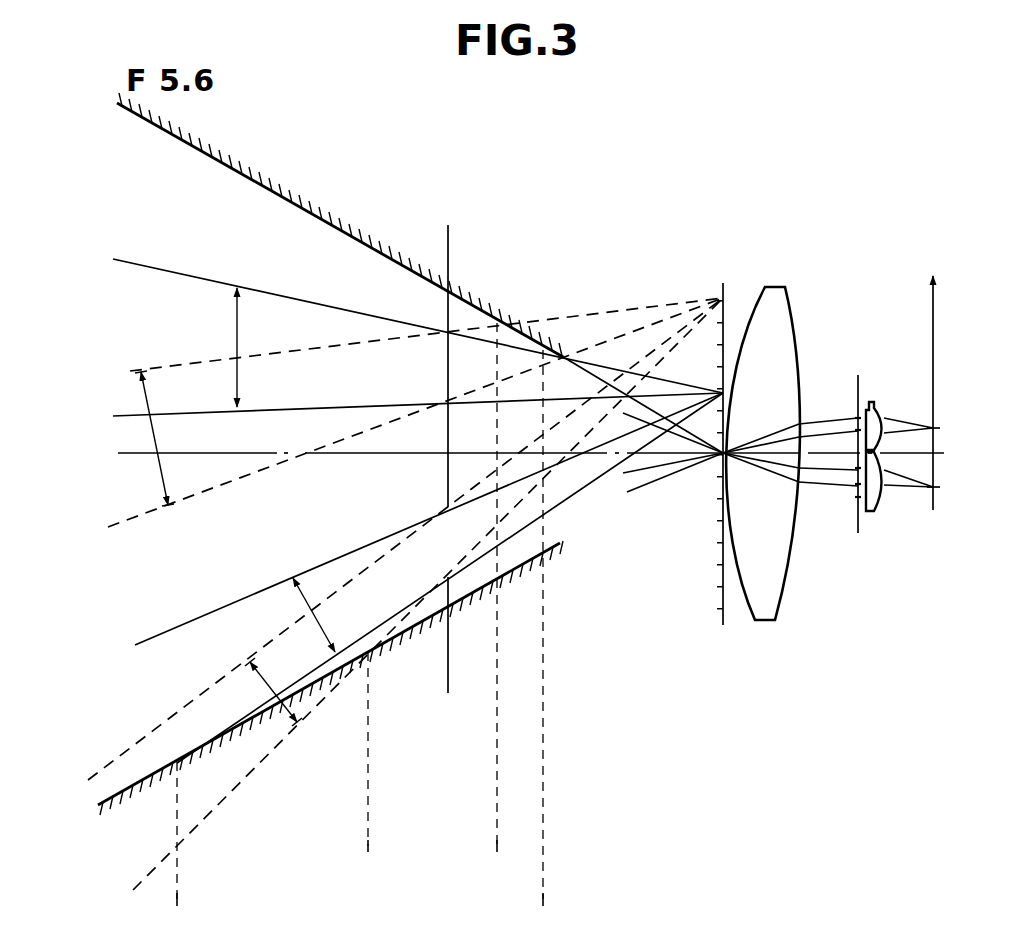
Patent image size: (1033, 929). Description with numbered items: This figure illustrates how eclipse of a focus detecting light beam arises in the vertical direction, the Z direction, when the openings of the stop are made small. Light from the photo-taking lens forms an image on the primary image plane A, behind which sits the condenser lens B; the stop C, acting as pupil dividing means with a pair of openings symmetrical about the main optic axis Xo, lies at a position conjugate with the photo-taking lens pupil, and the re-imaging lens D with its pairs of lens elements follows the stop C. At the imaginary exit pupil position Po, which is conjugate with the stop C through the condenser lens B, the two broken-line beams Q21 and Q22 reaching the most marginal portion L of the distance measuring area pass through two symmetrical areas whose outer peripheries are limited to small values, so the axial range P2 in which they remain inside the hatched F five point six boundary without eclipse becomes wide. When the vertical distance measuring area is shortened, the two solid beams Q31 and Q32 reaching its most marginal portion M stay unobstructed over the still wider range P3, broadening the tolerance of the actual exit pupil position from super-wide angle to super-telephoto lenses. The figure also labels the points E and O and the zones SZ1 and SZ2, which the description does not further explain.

The primary image plane A is at (722, 469).
The condenser lens B is at (763, 471).
The stop C is at (858, 471).
The re-imaging lens D is at (879, 471).
The image sensor plane E is at (931, 487).
The most marginal portion of the distance measuring area L is at (419, 582).
The most marginal portion of the short distance measuring area M is at (440, 511).
The axial pupil point (optical axis) O is at (682, 430).
The Z direction Z is at (932, 377).
The first sensor zone SZ1 is at (858, 420).
The second sensor zone SZ2 is at (857, 487).
The light beam for focus detection Q31 is at (204, 347).
The light beam for focus detection Q21 is at (139, 438).
The light beam for focus detection Q32 is at (295, 615).
The light beam for focus detection Q22 is at (260, 692).
The main optic axis Xo is at (358, 461).
The imaginary exit pupil position Po is at (447, 479).
The range in the direction of the optic axis P2 is at (497, 846).
The range in the direction of the optic axis P3 is at (543, 899).